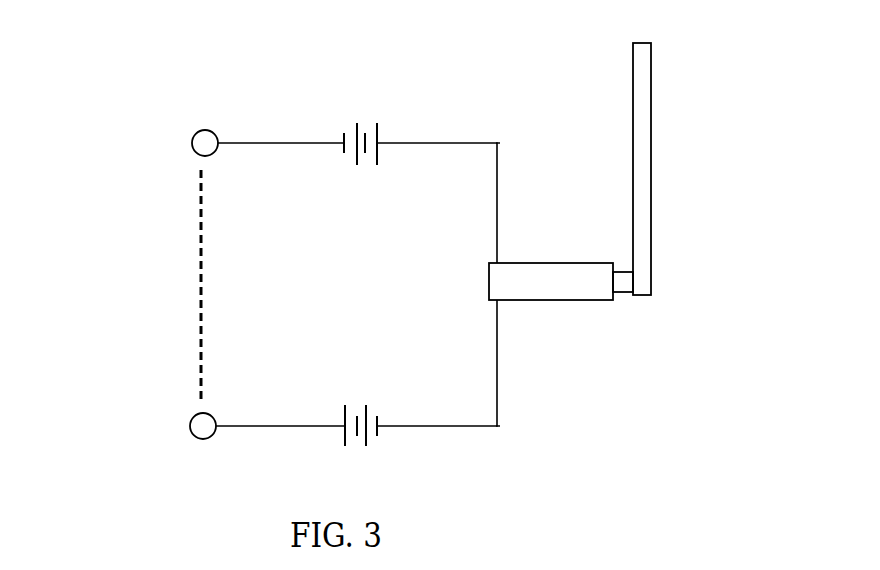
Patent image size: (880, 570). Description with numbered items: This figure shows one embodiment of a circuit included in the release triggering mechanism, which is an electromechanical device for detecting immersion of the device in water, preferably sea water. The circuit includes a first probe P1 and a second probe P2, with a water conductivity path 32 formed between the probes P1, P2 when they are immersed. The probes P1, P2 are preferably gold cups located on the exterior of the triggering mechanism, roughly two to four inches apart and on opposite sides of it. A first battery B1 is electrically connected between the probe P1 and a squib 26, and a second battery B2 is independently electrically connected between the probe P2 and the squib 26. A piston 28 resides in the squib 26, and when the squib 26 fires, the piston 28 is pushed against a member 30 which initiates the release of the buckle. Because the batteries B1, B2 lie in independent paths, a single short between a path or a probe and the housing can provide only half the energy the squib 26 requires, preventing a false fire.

The first probe P1 is at (200, 140).
The second probe P2 is at (196, 418).
The first battery B1 is at (360, 140).
The second battery B2 is at (357, 412).
The squib 26 is at (523, 280).
The piston 28 is at (622, 280).
The member 30 is at (643, 108).
The water conductivity path 32 is at (200, 295).